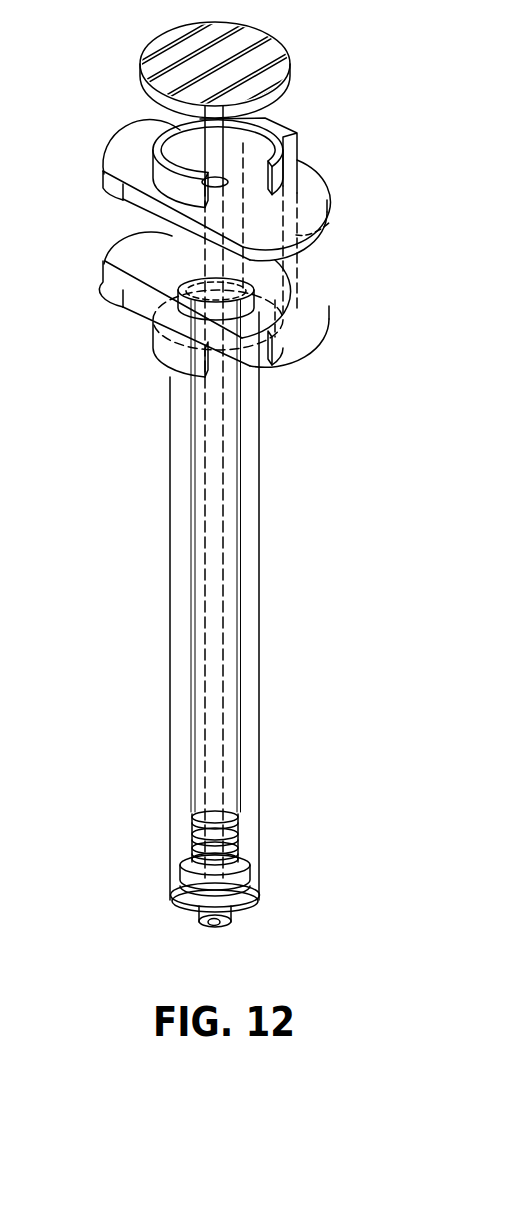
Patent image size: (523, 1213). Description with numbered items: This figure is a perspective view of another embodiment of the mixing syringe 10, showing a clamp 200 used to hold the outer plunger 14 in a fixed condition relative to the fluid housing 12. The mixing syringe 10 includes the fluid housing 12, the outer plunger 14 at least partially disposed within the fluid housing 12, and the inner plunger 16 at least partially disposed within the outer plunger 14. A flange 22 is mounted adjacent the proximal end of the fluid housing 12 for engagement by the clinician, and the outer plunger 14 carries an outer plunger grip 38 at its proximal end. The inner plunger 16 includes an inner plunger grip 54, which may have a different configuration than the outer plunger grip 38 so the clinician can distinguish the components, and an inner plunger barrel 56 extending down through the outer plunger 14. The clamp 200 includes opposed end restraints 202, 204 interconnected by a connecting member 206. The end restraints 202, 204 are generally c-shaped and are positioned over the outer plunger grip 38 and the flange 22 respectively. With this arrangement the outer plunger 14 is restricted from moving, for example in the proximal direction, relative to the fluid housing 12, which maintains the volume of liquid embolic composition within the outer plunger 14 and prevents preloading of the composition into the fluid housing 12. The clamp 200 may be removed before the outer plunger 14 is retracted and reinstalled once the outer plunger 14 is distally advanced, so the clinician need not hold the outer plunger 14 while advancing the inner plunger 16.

The mixing syringe 10 is at (300, 587).
The fluid housing 12 is at (260, 418).
The outer plunger 14 is at (200, 553).
The inner plunger 16 is at (220, 524).
The flange 22 is at (133, 268).
The outer plunger grip 38 is at (317, 204).
The inner plunger grip 54 is at (168, 53).
The inner plunger barrel 56 is at (140, 165).
The clamp 200 is at (314, 161).
The end restraint 202 is at (257, 140).
The end restraint 204 is at (170, 363).
The connecting member 206 is at (323, 227).